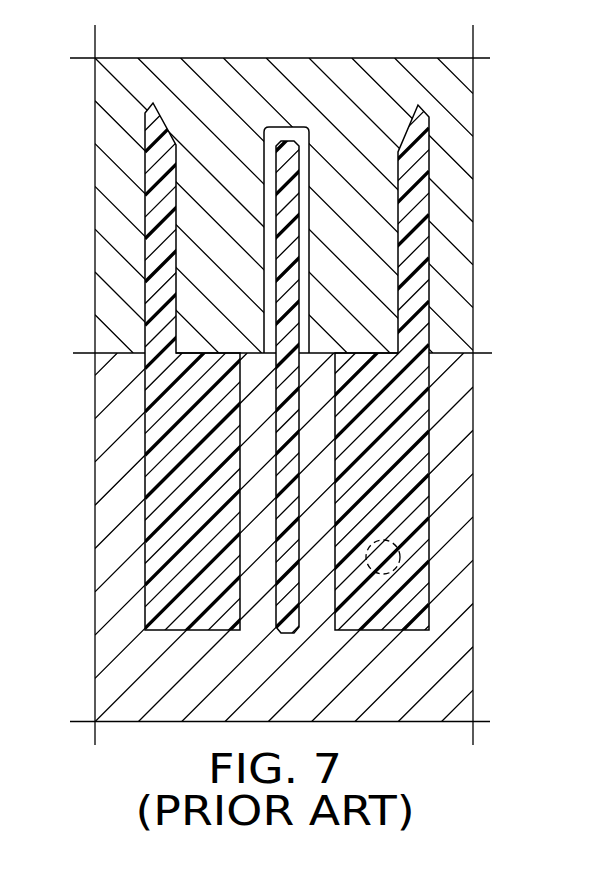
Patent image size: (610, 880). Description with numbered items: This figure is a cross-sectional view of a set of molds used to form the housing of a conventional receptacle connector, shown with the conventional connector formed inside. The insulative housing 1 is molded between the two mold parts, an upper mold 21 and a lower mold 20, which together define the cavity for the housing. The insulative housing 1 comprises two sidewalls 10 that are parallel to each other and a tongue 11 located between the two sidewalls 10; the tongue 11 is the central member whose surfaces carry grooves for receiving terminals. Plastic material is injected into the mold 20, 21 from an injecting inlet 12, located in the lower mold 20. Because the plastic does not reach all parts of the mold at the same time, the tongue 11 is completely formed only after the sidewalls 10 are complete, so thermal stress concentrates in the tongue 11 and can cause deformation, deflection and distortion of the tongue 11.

The insulative housing 1 is at (150, 172).
The sidewalls 10 is at (155, 393).
The tongue 11 is at (290, 152).
The injecting inlet 12 is at (387, 562).
The mold 20 is at (405, 684).
The mold 21 is at (447, 145).